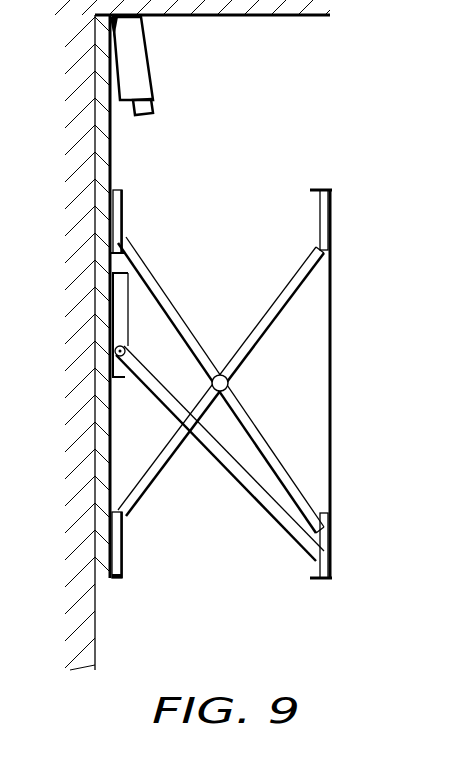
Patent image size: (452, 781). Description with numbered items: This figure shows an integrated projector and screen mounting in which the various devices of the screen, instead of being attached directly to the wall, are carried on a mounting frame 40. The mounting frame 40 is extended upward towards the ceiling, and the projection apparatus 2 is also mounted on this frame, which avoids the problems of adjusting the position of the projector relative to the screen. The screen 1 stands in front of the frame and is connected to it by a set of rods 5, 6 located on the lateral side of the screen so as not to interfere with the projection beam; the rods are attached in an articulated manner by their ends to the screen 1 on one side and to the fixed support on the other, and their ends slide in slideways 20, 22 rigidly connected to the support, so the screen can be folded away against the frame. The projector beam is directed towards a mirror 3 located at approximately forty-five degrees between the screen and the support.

The screen 1 is at (332, 372).
The projection apparatus 2 is at (152, 66).
The mirror 3 is at (262, 494).
The rod 5 is at (283, 296).
The rod 6 is at (160, 293).
The slideway 20 is at (122, 565).
The slideway 22 is at (124, 199).
The mounting frame 40 is at (105, 379).